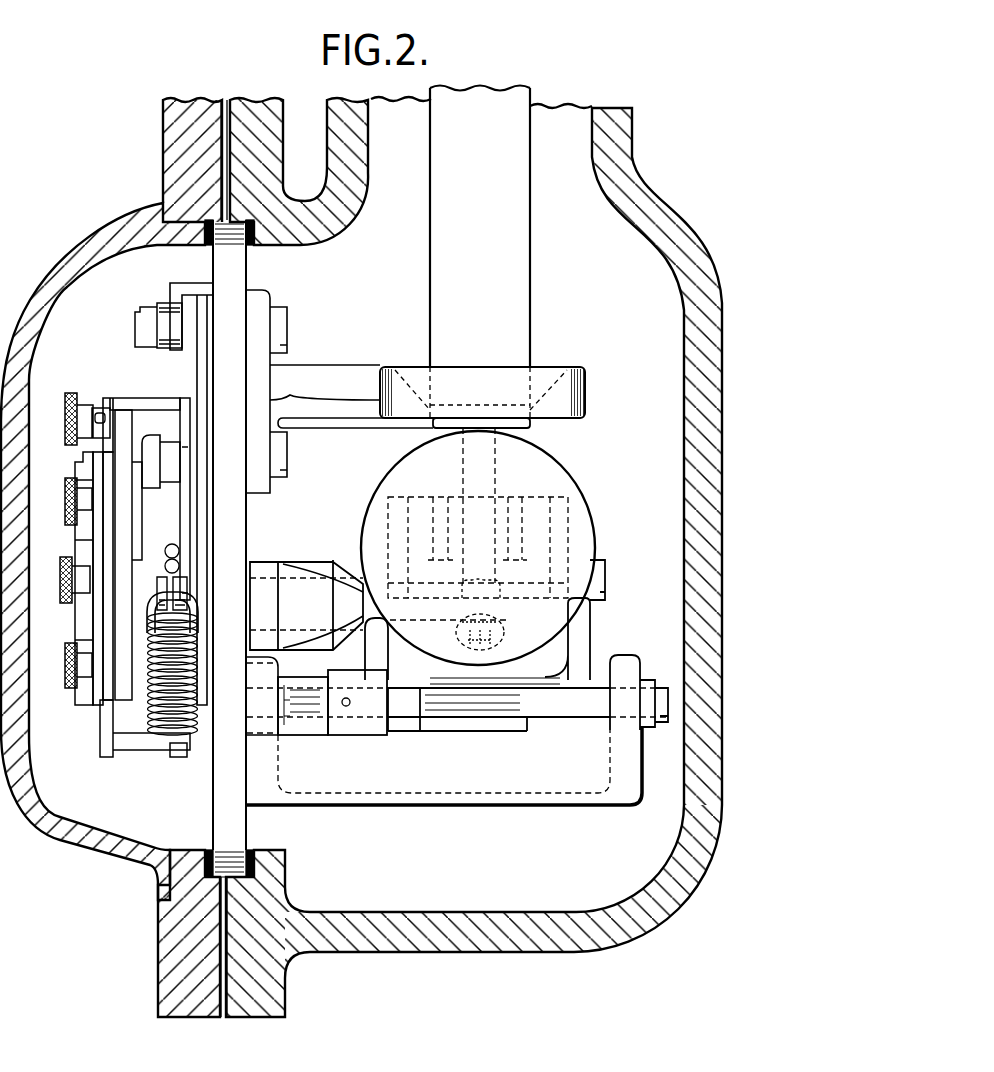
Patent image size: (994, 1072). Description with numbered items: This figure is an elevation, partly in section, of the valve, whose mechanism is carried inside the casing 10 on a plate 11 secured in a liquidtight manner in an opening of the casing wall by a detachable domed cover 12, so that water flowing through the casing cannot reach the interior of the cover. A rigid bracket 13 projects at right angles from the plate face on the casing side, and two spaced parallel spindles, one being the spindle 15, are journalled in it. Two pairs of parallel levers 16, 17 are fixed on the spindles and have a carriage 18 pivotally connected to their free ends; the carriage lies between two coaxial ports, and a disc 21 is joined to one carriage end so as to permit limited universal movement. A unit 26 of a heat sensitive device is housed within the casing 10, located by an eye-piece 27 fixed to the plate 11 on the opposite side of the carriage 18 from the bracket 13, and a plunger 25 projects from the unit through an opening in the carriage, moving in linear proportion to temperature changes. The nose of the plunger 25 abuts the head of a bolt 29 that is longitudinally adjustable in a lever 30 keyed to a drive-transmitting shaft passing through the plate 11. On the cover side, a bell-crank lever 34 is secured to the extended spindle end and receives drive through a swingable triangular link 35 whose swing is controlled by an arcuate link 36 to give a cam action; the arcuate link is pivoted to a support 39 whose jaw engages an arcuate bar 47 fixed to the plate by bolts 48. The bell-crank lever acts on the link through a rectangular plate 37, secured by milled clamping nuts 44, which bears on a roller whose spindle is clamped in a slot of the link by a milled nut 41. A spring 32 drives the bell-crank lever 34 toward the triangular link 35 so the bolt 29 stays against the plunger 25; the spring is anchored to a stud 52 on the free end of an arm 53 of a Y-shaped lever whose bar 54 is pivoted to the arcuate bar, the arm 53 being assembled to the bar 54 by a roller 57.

The casing 10 is at (637, 157).
The plate 11 is at (237, 273).
The domed cover 12 is at (100, 238).
The bracket 13 is at (285, 806).
The spindle 15 is at (403, 710).
The levers 16 is at (400, 663).
The levers 17 is at (580, 630).
The carriage 18 is at (570, 510).
The disc 21 is at (557, 472).
The plunger 25 is at (463, 466).
The unit of heat sensitive device 26 is at (510, 277).
The eye-piece 27 is at (587, 395).
The bolt 29 is at (462, 583).
The lever 30 is at (298, 558).
The spring 32 is at (155, 737).
The bell-crank lever 34 is at (96, 703).
The triangular link 35 is at (93, 613).
The arcuate link 36 is at (104, 392).
The rectangular plate 37 is at (118, 396).
The support 39 is at (162, 393).
The milled nut 41 is at (58, 580).
The milled clamping nuts 44 is at (65, 493).
The arcuate bar 47 is at (202, 282).
The bolts 48 is at (148, 306).
The stud 52 is at (187, 593).
The arm 53 is at (204, 543).
The bar 54 is at (184, 390).
The roller 57 is at (150, 440).